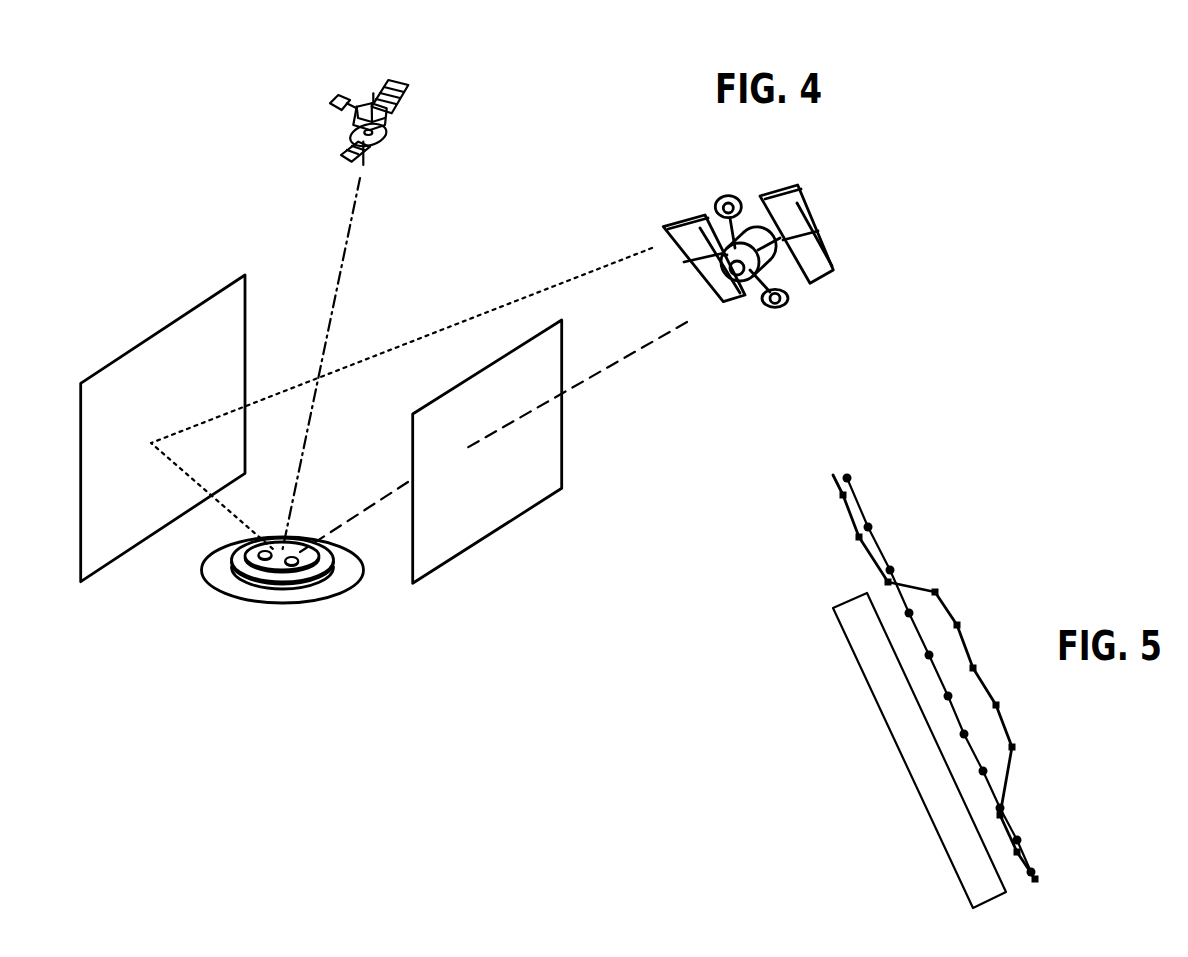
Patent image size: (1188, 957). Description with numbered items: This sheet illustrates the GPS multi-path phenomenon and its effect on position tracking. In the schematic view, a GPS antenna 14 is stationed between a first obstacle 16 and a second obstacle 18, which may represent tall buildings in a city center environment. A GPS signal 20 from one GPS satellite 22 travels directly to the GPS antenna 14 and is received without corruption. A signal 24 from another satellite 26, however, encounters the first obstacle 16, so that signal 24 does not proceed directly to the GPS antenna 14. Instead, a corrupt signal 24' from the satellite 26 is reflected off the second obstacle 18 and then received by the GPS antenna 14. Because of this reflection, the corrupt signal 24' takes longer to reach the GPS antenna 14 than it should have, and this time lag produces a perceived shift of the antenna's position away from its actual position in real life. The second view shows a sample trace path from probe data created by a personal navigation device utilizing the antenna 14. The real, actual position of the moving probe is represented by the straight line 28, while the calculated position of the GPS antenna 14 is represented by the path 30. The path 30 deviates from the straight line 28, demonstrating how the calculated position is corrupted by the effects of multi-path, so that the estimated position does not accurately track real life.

In FIG. 4, the GPS antenna 14 is at (247, 590).
In FIG. 4, the first obstacle 16 is at (497, 515).
In FIG. 4, the second obstacle 18 is at (159, 344).
In FIG. 5, the second obstacle 18 is at (882, 682).
In FIG. 4, the GPS signal 20 is at (352, 233).
In FIG. 4, the GPS satellite 22 is at (390, 120).
In FIG. 4, the signal 24 is at (497, 437).
In FIG. 4, the corrupt signal 24' is at (401, 391).
In FIG. 4, the satellite 26 is at (811, 211).
In FIG. 5, the straight line 28 is at (860, 506).
In FIG. 5, the path 30 is at (917, 585).